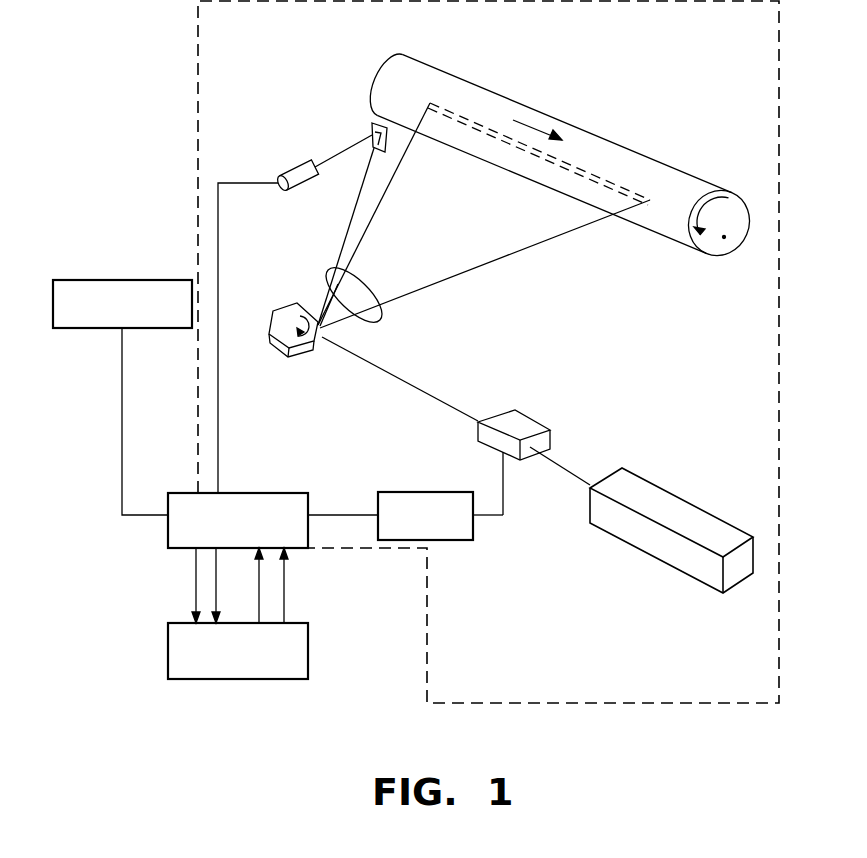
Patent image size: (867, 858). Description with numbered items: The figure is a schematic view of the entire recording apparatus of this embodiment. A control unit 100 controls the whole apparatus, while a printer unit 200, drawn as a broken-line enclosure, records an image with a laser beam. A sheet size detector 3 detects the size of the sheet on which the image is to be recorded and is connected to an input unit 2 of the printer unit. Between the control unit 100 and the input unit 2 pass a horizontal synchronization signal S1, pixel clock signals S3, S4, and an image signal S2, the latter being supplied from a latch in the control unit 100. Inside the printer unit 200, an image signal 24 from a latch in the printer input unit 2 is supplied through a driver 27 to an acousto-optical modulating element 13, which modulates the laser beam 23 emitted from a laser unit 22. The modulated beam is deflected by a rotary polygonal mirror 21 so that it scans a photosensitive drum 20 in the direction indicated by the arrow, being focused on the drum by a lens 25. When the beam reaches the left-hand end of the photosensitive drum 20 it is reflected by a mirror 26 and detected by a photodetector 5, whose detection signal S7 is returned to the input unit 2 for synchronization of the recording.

The input unit 2 is at (168, 532).
The sheet size detector 3 is at (121, 280).
The photodetector 5 is at (297, 167).
The acousto-optical modulating element 13 is at (530, 422).
The photosensitive drum 20 is at (648, 157).
The rotary polygonal mirror 21 is at (300, 360).
The laser unit 22 is at (684, 505).
The laser beam 23 is at (570, 463).
The image signal 24 is at (345, 512).
The lens 25 is at (380, 315).
The mirror 26 is at (368, 130).
The driver 27 is at (452, 541).
The control unit 100 is at (168, 652).
The printer unit 200 is at (675, 704).
The horizontal synchronization signal S1 is at (196, 571).
The image signal S2 is at (286, 580).
The pixel clock signal S3 is at (259, 595).
The pixel clock signal S4 is at (216, 590).
The detection signal S7 is at (220, 445).